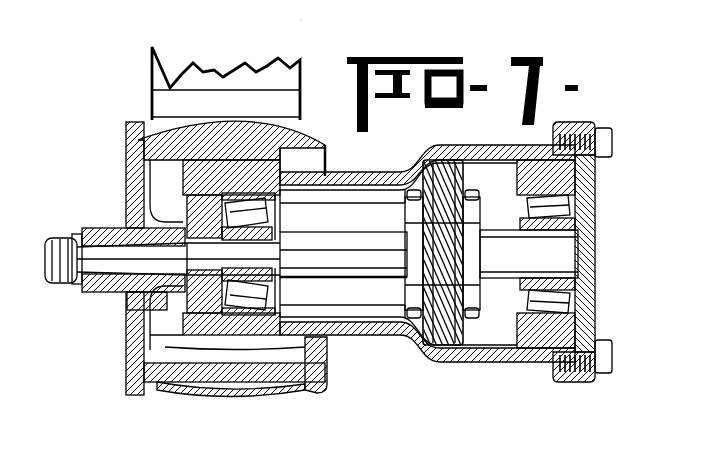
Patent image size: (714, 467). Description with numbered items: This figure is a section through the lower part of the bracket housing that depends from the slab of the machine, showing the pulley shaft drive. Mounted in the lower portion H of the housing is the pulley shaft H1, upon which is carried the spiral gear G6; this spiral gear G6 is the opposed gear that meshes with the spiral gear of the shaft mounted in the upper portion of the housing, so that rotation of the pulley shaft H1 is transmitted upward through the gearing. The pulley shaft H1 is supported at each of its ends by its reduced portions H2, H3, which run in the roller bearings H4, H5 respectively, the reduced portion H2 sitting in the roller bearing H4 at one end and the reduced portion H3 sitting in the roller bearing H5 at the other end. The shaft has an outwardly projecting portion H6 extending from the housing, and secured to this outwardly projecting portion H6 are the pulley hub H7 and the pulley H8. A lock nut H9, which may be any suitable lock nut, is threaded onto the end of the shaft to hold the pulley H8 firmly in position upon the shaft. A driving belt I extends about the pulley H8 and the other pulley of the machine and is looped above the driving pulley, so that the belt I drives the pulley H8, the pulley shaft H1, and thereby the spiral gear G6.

The driving belt I is at (153, 68).
The pulley H8 is at (195, 137).
The lock nut H9 is at (58, 242).
The pulley hub H7 is at (100, 230).
The outwardly projecting portion of the shaft H6 is at (123, 257).
The reduced portion of the shaft H2 is at (233, 300).
The roller bearing H4 is at (247, 262).
The pulley shaft H1 is at (357, 263).
The lower portion of the housing H is at (415, 357).
The spiral gear G6 is at (443, 340).
The roller bearing H5 is at (580, 188).
The reduced portion of the shaft H3 is at (550, 250).